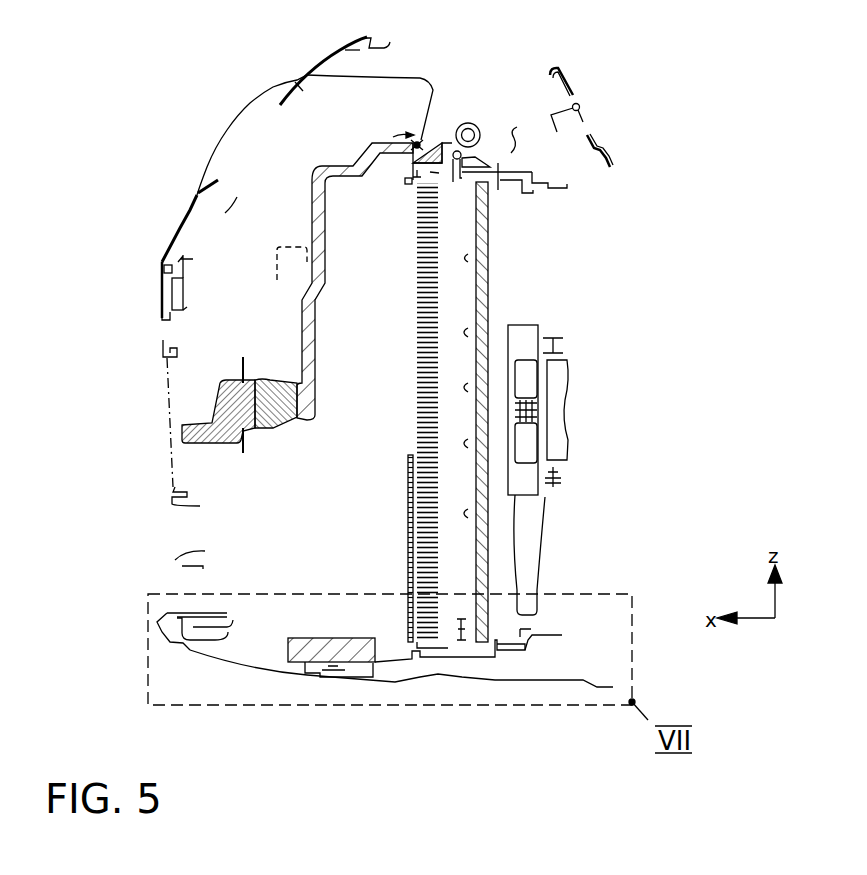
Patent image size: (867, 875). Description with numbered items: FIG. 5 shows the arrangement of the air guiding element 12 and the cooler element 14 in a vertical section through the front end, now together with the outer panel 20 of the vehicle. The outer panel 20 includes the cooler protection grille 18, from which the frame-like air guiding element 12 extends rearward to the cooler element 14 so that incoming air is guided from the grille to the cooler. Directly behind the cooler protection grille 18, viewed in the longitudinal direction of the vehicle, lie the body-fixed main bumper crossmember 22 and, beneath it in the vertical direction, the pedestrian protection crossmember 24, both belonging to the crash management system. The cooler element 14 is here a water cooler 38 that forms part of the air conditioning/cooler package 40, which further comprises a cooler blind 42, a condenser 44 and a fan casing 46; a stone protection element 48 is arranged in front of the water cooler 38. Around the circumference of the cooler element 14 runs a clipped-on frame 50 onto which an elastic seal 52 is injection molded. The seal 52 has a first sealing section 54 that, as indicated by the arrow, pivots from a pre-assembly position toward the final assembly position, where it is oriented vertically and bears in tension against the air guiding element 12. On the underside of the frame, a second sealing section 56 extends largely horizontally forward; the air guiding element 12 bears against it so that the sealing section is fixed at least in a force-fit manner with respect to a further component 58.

The air guiding element 12 is at (307, 328).
The cooler element 14 is at (466, 470).
The cooler protection grille 18 is at (180, 566).
The outer panel 20 is at (180, 228).
The main bumper crossmember 22 is at (268, 430).
The pedestrian protection crossmember 24 is at (217, 638).
The water cooler 38 is at (432, 637).
The air conditioning/cooler package 40 is at (499, 88).
The cooler blind 42 is at (467, 250).
The condenser 44 is at (480, 290).
The fan casing 46 is at (527, 337).
The stone protection element 48 is at (405, 535).
The frame 50 is at (433, 157).
The elastic seal 52 is at (435, 80).
The first sealing section 54 is at (418, 144).
The second sealing section 56 is at (393, 660).
The further component 58 is at (328, 668).